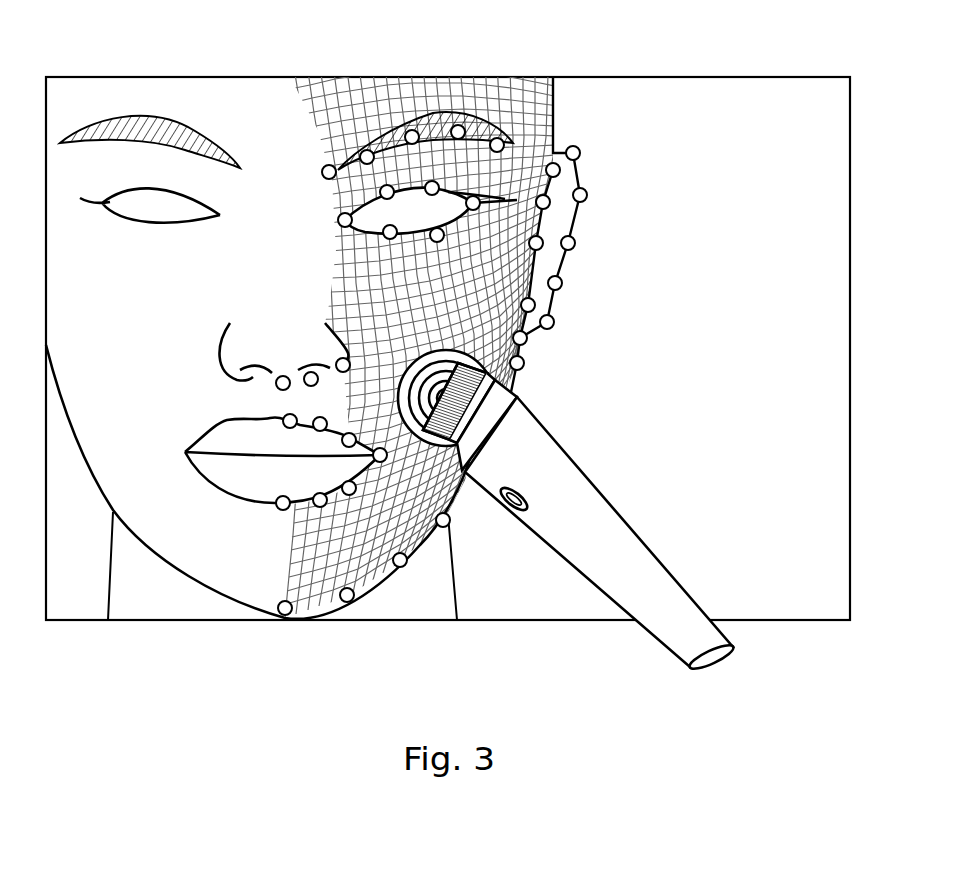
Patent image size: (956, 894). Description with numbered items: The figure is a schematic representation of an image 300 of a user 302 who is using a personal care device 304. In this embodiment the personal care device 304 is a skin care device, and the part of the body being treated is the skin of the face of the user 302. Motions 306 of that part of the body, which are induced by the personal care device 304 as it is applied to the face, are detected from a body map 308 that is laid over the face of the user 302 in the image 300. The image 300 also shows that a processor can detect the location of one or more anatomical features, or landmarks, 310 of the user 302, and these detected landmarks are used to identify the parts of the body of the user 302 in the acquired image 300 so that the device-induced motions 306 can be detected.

The image 300 is at (749, 77).
The user 302 is at (261, 96).
The personal care device 304 is at (585, 470).
The motions 306 is at (495, 372).
The body map 308 is at (385, 92).
The anatomical features 310 is at (586, 196).